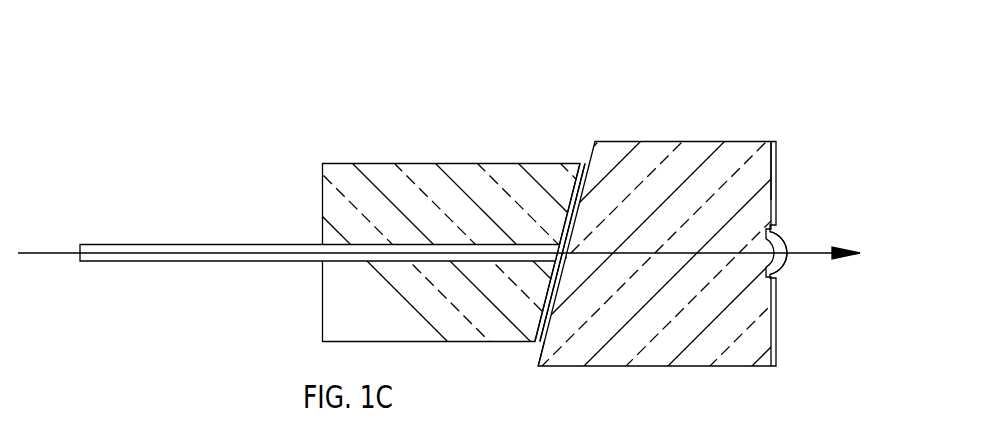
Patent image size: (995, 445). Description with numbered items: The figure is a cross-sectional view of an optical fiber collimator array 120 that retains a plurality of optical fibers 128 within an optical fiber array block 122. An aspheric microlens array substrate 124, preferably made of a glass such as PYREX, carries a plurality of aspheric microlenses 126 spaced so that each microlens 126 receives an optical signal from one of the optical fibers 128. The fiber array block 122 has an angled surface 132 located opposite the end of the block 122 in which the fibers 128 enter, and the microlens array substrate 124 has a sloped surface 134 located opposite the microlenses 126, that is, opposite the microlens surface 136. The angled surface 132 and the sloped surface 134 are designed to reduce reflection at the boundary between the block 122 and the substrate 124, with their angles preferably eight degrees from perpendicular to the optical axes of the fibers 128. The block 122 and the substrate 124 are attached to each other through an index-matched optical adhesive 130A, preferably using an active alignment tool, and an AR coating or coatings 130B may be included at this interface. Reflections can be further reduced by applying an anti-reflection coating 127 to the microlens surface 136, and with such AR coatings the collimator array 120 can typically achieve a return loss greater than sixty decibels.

The optical fiber collimator array 120 is at (503, 242).
The optical fiber array block 122 is at (377, 163).
The aspheric microlens array substrate 124 is at (647, 368).
The aspheric microlens 126 is at (788, 233).
The anti-reflection coating 127 is at (776, 184).
The optical fiber 128 is at (222, 261).
The index-matched optical adhesive 130A is at (587, 163).
The AR coating at the interface 130B is at (590, 163).
The angled surface 132 is at (557, 301).
The sloped surface 134 is at (538, 351).
The microlens surface 136 is at (766, 156).